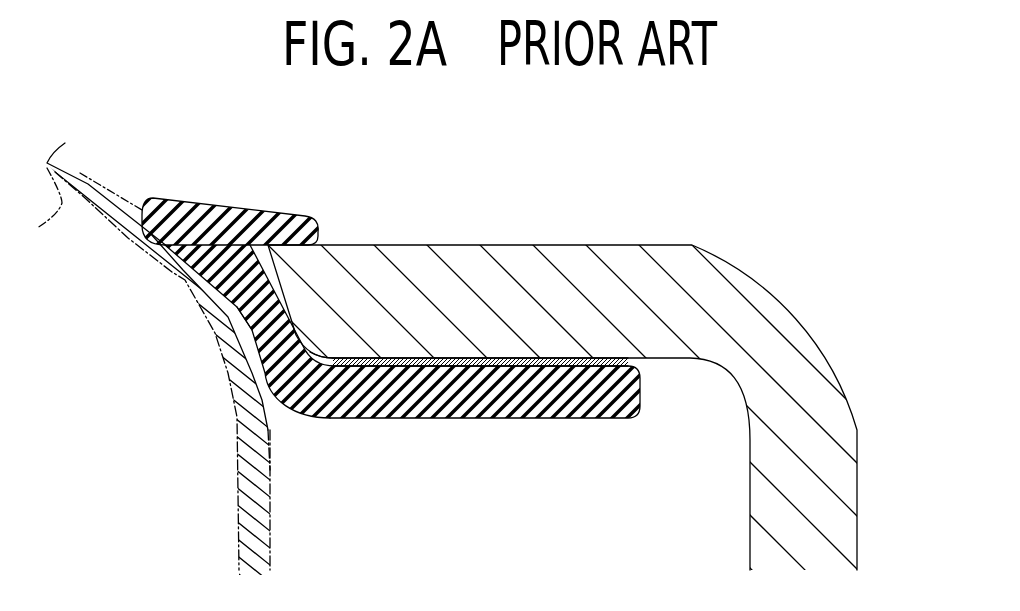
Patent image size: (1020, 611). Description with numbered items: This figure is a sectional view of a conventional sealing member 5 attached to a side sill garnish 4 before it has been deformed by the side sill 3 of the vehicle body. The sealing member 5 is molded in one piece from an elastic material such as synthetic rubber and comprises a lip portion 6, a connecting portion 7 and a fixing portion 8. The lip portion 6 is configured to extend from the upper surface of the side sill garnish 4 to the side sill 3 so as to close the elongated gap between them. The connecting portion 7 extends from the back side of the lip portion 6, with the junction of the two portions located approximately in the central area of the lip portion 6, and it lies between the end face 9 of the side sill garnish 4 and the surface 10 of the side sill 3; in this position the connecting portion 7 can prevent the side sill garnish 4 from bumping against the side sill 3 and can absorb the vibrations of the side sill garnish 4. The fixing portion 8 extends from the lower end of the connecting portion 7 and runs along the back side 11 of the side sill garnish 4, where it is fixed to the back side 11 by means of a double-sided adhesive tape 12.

The side sill 3 is at (242, 405).
The side sill garnish 4 is at (762, 303).
The sealing member 5 is at (422, 384).
The lip portion 6 is at (231, 217).
The connecting portion 7 is at (256, 338).
The fixing portion 8 is at (488, 397).
The end face 9 is at (258, 299).
The surface 10 is at (272, 434).
The back side 11 is at (338, 358).
The double-sided adhesive tape 12 is at (532, 357).